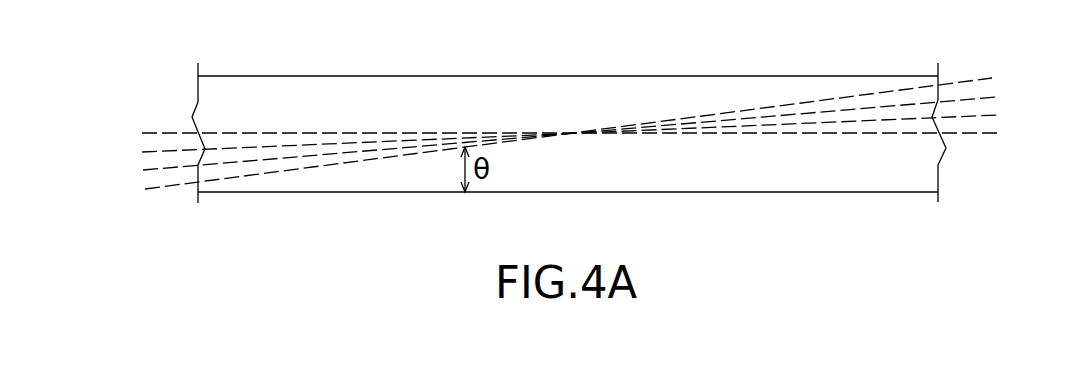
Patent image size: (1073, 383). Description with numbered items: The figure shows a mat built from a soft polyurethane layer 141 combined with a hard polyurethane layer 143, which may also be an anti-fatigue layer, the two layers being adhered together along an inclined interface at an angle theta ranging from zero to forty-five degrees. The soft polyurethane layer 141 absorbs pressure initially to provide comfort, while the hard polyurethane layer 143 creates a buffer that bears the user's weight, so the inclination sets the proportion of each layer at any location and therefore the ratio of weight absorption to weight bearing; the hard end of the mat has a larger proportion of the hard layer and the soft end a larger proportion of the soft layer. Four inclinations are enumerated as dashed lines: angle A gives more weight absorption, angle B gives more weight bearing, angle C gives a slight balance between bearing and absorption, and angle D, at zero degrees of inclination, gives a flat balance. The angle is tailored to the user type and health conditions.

The soft polyurethane layer 141 is at (340, 100).
The hard polyurethane layer 143 is at (797, 167).
The angle A is at (568, 133).
The angle B is at (567, 134).
The angle C is at (566, 135).
The angle D is at (569, 134).